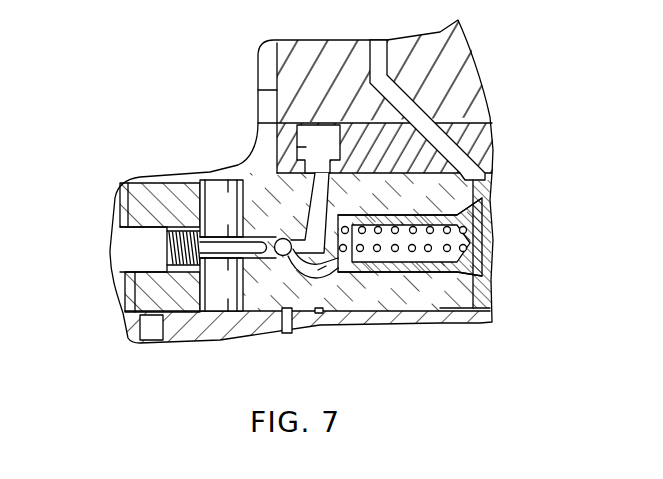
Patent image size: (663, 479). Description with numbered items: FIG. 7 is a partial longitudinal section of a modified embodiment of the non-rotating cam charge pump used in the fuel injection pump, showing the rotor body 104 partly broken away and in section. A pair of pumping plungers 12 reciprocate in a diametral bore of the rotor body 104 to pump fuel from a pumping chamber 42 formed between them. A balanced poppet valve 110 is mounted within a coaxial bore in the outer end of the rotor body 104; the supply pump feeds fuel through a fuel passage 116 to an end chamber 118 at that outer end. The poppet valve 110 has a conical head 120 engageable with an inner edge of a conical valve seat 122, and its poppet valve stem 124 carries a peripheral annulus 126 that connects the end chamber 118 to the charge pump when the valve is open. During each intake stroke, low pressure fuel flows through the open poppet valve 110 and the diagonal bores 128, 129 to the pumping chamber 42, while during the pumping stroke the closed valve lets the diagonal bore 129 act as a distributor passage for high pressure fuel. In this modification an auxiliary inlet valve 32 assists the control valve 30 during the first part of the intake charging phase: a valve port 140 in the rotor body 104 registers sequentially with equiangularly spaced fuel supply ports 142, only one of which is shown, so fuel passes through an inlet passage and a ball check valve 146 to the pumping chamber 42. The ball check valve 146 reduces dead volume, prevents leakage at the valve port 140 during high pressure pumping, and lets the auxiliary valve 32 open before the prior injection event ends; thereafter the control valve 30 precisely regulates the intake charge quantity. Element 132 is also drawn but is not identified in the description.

The pumping plungers 12 is at (234, 221).
The control valve 30 is at (457, 285).
The auxiliary inlet valve 32 is at (298, 189).
The pumping chamber 42 is at (198, 218).
The rotor body 104 is at (141, 296).
The balanced poppet valve 110 is at (493, 209).
The fuel passage 116 is at (396, 74).
The end chamber 118 is at (478, 292).
The conical head 120 is at (471, 271).
The conical valve seat 122 is at (471, 243).
The poppet valve stem 124 is at (393, 271).
The peripheral annulus 126 is at (458, 204).
The diagonal bore 128 is at (375, 149).
The diagonal bore 129 is at (344, 149).
The conduit 132 is at (325, 272).
The valve port 140 is at (321, 167).
The fuel supply ports 142 is at (297, 147).
The ball check valve 146 is at (306, 280).